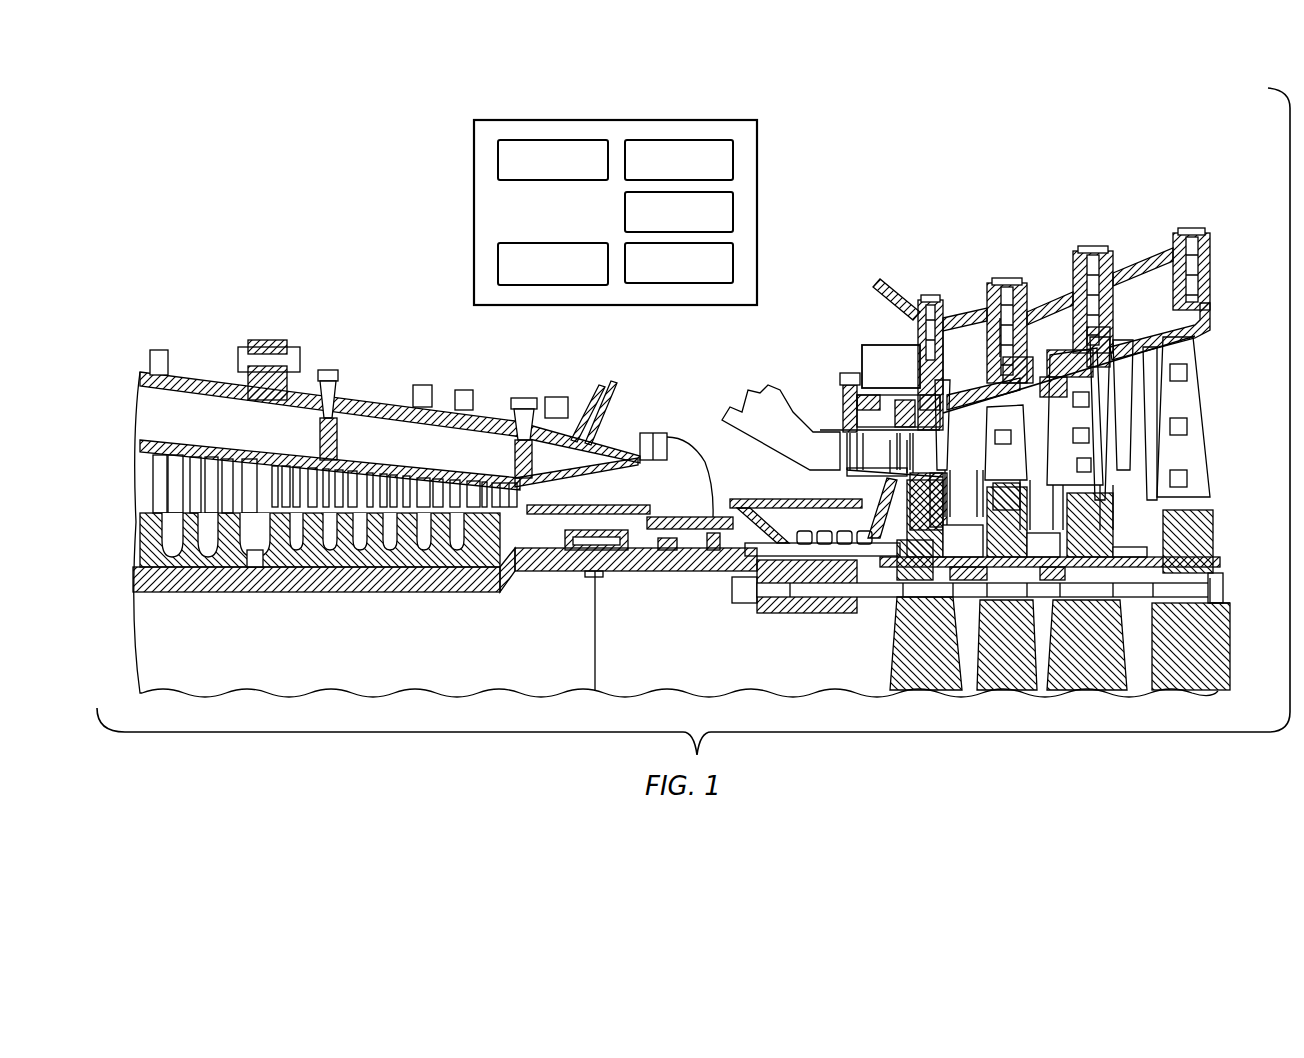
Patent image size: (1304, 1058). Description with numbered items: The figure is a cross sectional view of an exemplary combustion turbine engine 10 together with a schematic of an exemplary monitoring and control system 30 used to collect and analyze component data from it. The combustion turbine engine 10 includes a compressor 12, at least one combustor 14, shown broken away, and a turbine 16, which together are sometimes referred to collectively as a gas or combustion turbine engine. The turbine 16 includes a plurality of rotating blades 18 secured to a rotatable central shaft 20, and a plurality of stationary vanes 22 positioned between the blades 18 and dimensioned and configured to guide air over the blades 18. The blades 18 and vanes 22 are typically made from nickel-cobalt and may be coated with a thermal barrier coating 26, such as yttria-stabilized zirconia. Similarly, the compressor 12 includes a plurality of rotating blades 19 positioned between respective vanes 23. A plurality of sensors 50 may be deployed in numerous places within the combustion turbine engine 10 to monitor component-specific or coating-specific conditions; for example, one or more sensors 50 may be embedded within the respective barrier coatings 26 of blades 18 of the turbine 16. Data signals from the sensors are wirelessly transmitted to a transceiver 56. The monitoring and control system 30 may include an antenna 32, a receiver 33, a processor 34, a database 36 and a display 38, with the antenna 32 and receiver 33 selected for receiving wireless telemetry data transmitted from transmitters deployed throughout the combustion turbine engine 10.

The combustion turbine engine 10 is at (988, 149).
The compressor 12 is at (329, 302).
The combustor 14 is at (783, 428).
The turbine 16 is at (1098, 190).
The rotating blades 18 is at (1060, 427).
The rotating blades 19 is at (322, 455).
The rotatable central shaft 20 is at (703, 577).
The stationary vanes 22 is at (965, 430).
The vanes 23 is at (210, 488).
The thermal barrier coating 26 is at (985, 440).
The monitoring and control system 30 is at (557, 120).
The antenna 32 is at (733, 262).
The receiver 33 is at (733, 210).
The processor 34 is at (733, 158).
The database 36 is at (498, 158).
The display 38 is at (498, 262).
The sensors 50 is at (967, 440).
The transceiver 56 is at (155, 350).